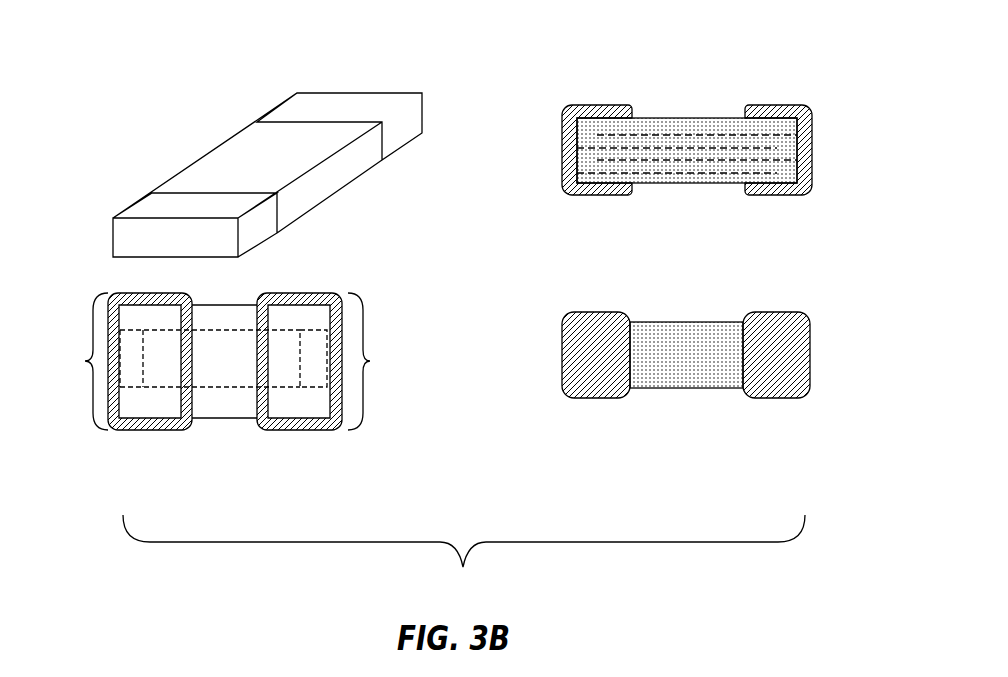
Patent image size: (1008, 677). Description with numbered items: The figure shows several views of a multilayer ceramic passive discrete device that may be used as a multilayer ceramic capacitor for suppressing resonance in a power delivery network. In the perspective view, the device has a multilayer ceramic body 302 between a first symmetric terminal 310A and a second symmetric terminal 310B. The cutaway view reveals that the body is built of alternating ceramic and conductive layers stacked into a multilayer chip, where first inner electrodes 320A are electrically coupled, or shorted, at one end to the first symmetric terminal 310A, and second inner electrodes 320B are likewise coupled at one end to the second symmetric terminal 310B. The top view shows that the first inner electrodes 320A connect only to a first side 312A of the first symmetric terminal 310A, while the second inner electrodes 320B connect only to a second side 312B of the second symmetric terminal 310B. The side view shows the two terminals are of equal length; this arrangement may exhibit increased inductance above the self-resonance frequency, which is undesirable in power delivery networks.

The multilayer ceramic body 302 is at (233, 157).
The first symmetric terminal 310A is at (337, 107).
The second symmetric terminal 310B is at (147, 213).
The first side 312A is at (380, 361).
The second side 312B is at (72, 361).
The first inner electrodes 320A is at (318, 323).
The second inner electrodes 320B is at (130, 413).